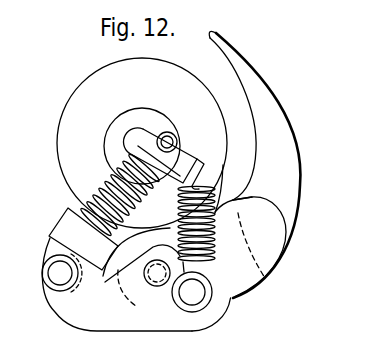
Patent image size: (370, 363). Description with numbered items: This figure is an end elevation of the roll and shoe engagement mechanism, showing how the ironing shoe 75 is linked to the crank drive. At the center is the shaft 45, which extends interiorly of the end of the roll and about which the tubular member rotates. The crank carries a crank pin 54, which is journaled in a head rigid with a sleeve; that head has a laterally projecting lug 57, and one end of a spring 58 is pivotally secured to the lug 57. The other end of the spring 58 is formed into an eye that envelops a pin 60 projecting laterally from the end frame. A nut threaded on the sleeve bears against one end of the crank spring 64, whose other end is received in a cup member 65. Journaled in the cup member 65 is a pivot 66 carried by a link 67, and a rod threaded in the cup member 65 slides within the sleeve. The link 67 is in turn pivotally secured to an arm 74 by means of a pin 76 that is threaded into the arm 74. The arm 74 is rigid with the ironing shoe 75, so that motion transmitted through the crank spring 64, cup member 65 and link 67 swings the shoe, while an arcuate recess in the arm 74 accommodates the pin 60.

The shaft 45 is at (130, 141).
The crank pin 54 is at (172, 140).
The lug 57 is at (180, 170).
The spring 58 is at (232, 204).
The pin 60 is at (196, 294).
The crank spring 64 is at (100, 184).
The cup member 65 is at (72, 213).
The pivot 66 is at (58, 271).
The link 67 is at (62, 322).
The arm 74 is at (110, 276).
The ironing shoe 75 is at (153, 62).
The pin 76 is at (157, 277).